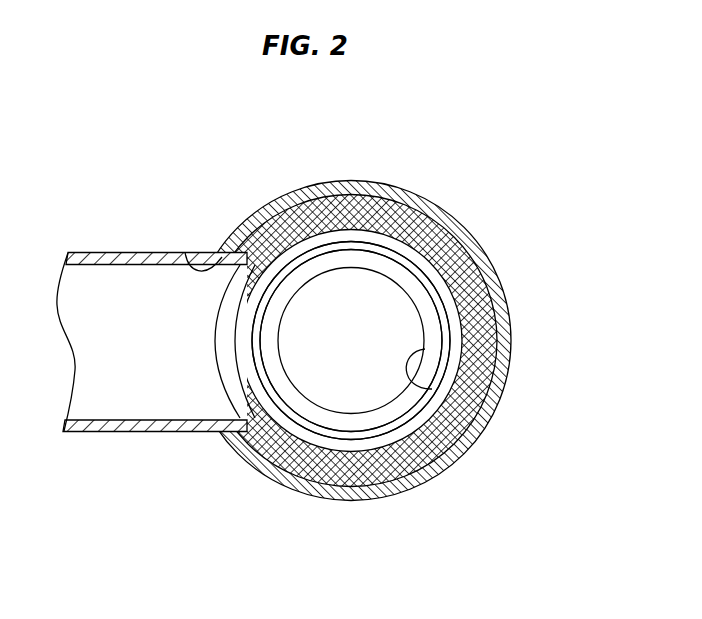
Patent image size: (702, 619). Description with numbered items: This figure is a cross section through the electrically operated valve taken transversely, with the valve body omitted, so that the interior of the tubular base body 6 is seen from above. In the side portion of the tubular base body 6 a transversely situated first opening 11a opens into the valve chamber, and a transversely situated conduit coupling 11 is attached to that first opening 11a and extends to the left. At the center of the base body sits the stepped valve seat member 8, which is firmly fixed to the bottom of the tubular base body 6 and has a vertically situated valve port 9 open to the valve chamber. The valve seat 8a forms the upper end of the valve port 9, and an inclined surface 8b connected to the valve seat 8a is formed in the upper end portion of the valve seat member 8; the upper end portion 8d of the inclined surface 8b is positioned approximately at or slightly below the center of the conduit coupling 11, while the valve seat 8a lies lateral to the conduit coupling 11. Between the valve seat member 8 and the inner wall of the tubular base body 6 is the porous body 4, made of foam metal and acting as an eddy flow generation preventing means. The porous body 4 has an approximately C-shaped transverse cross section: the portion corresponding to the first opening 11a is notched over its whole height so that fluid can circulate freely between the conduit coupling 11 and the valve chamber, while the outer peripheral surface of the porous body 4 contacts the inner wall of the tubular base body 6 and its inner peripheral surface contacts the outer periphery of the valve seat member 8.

The porous body 4 is at (300, 203).
The tubular base body 6 is at (382, 181).
The stepped valve seat member 8 is at (452, 325).
The valve seat 8a is at (432, 389).
The inclined surface 8b is at (392, 268).
The upper end portion of the inclined surface 8d is at (430, 280).
The valve port 9 is at (293, 302).
The conduit coupling 11 is at (140, 252).
The first opening 11a is at (186, 252).